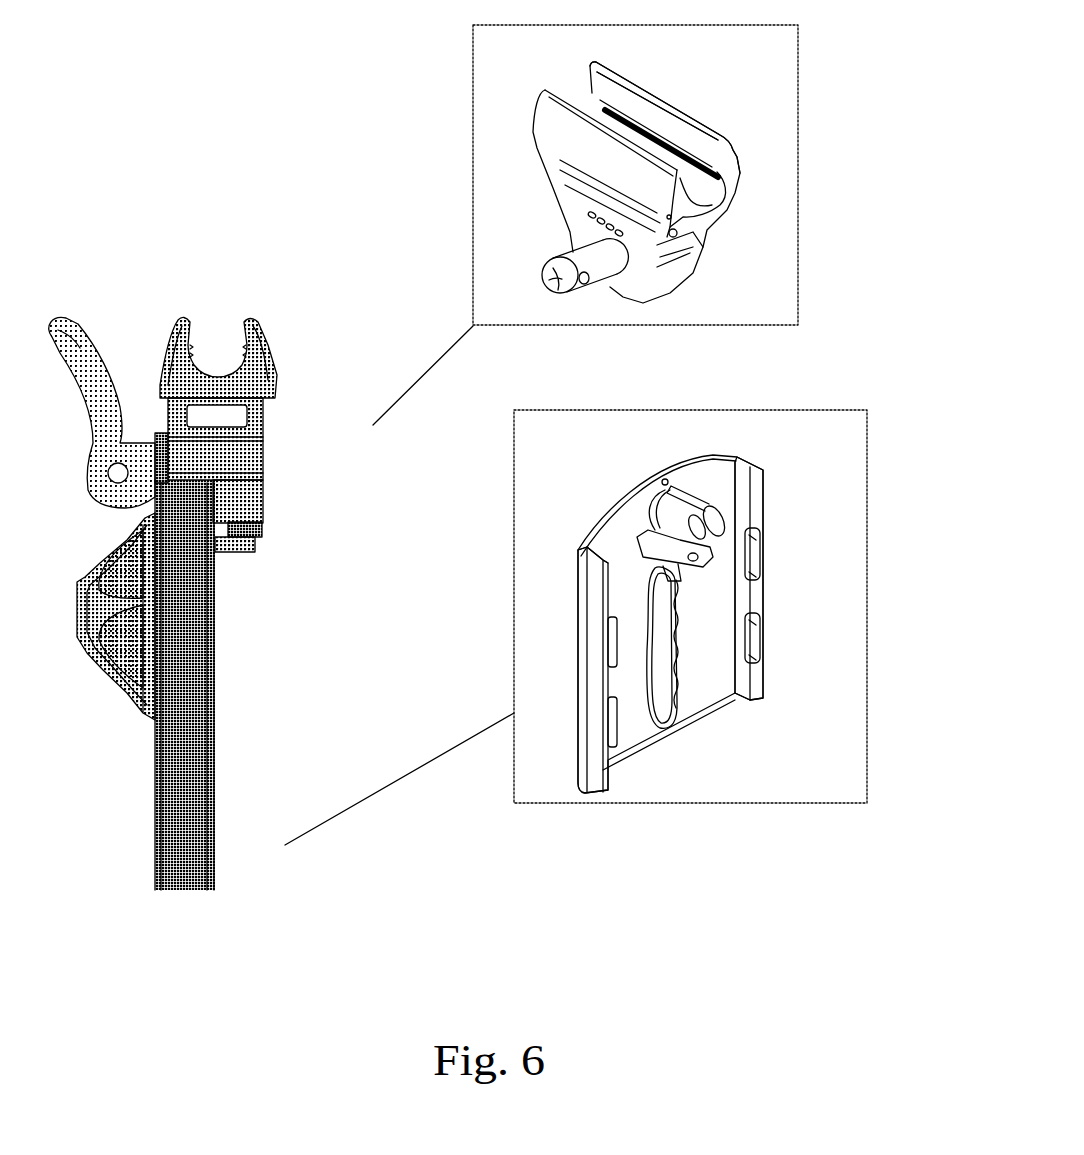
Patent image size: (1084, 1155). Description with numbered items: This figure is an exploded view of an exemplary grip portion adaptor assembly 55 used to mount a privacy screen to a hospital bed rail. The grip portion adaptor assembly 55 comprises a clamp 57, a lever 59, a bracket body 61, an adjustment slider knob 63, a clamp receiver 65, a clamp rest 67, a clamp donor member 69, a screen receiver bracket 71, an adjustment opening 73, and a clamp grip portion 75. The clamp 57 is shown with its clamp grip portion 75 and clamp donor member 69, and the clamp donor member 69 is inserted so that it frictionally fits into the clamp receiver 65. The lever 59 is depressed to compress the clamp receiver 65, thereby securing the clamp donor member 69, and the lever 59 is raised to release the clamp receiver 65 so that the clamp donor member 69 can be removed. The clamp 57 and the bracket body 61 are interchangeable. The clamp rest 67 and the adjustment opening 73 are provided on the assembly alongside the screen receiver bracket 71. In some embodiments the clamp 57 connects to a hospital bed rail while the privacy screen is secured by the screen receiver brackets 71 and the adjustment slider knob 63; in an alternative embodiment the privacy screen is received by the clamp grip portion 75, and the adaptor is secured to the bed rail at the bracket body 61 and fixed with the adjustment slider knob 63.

The grip portion adaptor assembly 55 is at (127, 217).
The clamp 57 is at (262, 328).
The lever 59 is at (52, 318).
The bracket body 61 is at (217, 677).
The adjustment slider knob 63 is at (73, 643).
The clamp receiver 65 is at (668, 522).
The clamp rest 67 is at (713, 557).
The clamp donor member 69 is at (540, 278).
The screen receiver bracket 71 is at (613, 650).
The adjustment opening 73 is at (680, 677).
The clamp grip portion 75 is at (737, 148).